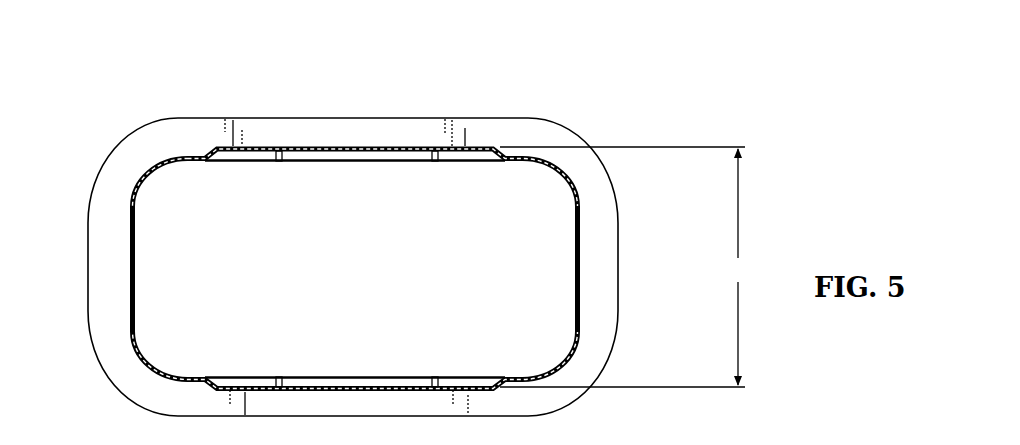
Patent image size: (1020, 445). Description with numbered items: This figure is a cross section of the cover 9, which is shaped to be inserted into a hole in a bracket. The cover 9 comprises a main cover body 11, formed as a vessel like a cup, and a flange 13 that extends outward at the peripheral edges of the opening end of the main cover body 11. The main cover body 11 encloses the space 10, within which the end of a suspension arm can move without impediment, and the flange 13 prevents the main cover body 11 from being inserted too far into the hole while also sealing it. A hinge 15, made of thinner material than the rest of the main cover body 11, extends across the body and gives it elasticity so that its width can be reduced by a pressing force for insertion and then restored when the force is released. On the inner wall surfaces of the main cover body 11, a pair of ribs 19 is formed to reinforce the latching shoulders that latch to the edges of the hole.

The cover 9 is at (631, 111).
The space 10 is at (367, 282).
The main cover body 11 is at (144, 360).
The flange 13 is at (384, 116).
The hinge 15 is at (128, 265).
The ribs 19 is at (276, 158).